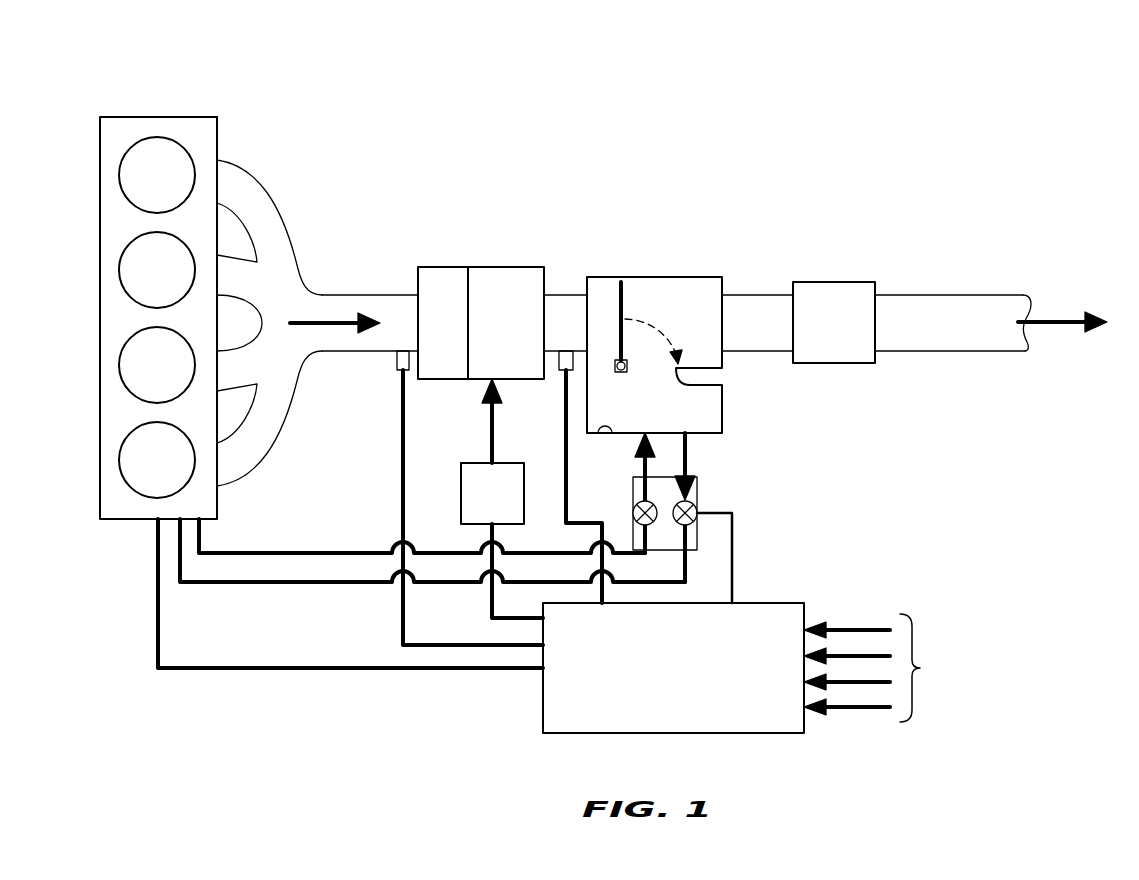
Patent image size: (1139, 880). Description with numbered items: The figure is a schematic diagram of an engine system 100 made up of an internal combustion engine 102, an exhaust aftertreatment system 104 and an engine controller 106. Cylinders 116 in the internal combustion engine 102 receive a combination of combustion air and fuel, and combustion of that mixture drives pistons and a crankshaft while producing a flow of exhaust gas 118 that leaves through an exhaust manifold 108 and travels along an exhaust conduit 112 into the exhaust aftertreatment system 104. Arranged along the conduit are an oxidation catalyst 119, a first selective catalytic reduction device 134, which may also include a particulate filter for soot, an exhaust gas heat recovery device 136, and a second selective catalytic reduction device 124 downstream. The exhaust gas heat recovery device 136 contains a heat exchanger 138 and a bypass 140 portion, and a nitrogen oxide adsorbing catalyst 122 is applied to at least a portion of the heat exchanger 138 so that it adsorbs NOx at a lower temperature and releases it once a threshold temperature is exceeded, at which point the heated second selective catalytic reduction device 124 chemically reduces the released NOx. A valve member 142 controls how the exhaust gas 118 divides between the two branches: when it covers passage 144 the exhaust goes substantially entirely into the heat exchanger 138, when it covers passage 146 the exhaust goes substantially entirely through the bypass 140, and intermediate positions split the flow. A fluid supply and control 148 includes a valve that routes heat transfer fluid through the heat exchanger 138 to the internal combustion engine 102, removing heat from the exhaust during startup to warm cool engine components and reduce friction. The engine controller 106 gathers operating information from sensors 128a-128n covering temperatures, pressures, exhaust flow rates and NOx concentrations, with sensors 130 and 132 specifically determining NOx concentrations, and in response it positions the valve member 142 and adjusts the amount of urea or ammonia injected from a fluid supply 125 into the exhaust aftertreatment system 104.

The engine system 100 is at (612, 87).
The internal combustion engine 102 is at (153, 275).
The exhaust aftertreatment system 104 is at (691, 143).
The engine controller 106 is at (668, 683).
The exhaust manifold 108 is at (290, 242).
The exhaust conduit 112 is at (355, 295).
The cylinders 116 is at (104, 167).
The exhaust gas 118 is at (318, 325).
The oxidation catalyst 119 is at (447, 267).
The nitrogen oxide adsorbing catalyst 122 is at (600, 440).
The second selective catalytic reduction device 124 is at (835, 282).
The fluid supply 125 is at (512, 505).
The sensor 128a is at (923, 668).
The sensor 128n is at (1043, 682).
The sensor 130 is at (410, 372).
The sensor 132 is at (560, 372).
The first selective catalytic reduction device 134 is at (505, 267).
The exhaust gas heat recovery device 136 is at (686, 293).
The heat exchanger 138 is at (722, 405).
The bypass 140 is at (697, 277).
The valve member 142 is at (624, 298).
The passage 144 is at (602, 300).
The passage 146 is at (637, 372).
The fluid supply and control 148 is at (700, 494).